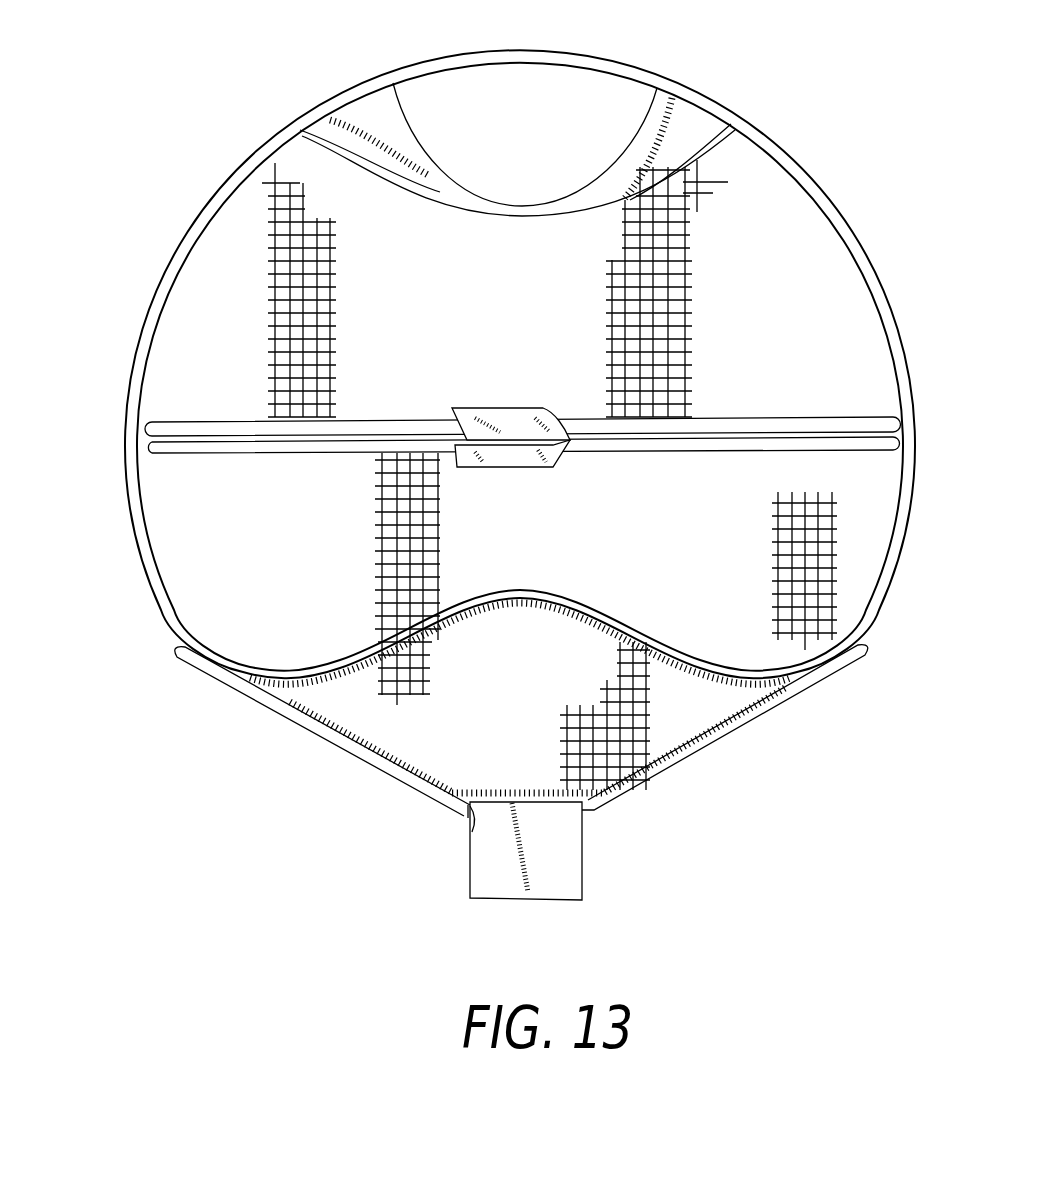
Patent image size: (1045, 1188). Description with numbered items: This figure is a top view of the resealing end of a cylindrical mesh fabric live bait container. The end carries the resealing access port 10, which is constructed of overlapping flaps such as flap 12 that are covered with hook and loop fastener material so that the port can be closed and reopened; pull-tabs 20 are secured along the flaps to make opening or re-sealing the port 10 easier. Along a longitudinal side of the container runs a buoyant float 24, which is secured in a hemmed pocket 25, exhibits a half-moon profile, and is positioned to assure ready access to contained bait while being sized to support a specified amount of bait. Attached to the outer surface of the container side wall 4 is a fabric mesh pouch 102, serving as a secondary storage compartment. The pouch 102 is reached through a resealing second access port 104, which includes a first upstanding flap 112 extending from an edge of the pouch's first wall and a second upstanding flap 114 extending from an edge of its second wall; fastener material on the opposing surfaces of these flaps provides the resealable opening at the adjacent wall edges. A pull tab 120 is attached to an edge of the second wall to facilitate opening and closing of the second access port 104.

The exterior wall 4 is at (140, 333).
The access port 10 is at (180, 425).
The flap 12 is at (223, 447).
The pull-tab 20 is at (510, 457).
The buoyant float 24 is at (520, 75).
The hemmed pocket 25 is at (360, 107).
The fabric mesh pouch 102 is at (240, 710).
The second access port 104 is at (368, 687).
The first upstanding flap 112 is at (567, 597).
The second upstanding flap 114 is at (390, 770).
The pull tab 120 is at (568, 850).